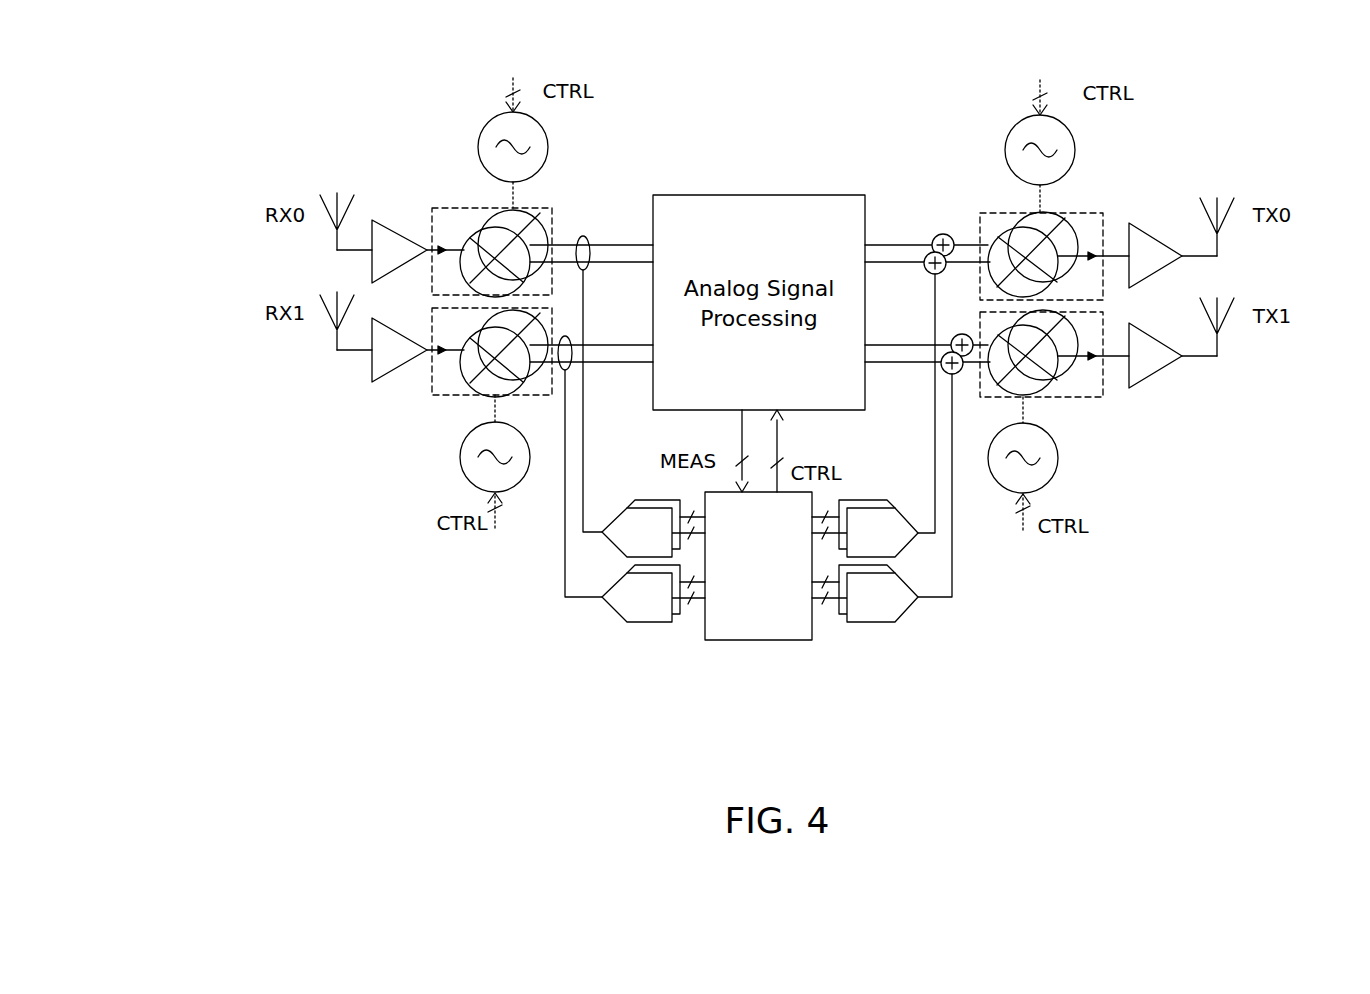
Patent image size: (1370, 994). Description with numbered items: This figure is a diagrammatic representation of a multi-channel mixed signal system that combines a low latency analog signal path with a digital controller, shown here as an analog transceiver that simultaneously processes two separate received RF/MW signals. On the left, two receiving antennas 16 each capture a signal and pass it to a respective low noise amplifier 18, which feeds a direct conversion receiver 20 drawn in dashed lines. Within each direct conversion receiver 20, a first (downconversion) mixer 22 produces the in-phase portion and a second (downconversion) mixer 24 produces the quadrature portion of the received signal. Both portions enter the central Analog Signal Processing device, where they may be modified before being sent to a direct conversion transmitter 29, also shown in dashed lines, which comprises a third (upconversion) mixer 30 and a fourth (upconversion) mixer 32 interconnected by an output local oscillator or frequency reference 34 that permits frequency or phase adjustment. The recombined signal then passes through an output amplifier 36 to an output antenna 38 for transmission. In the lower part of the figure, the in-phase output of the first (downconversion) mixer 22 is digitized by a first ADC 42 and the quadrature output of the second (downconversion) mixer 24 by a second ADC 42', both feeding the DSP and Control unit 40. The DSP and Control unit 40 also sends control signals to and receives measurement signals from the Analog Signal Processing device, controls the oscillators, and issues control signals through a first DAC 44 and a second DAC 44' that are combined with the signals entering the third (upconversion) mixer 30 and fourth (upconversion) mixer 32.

The receiving antenna 16 is at (330, 222).
The low noise amplifier 18 is at (393, 218).
The direct conversion receiver 20 is at (467, 208).
The first (downconversion) mixer 22 is at (530, 215).
The second (downconversion) mixer 24 is at (555, 215).
The direct conversion transmitter 29 is at (1077, 213).
The third (upconversion) mixer 30 is at (1085, 385).
The fourth (upconversion) mixer 32 is at (990, 215).
The output local oscillator or frequency reference 34 is at (1020, 125).
The output amplifier 36 is at (1158, 270).
The output antenna 38 is at (1222, 232).
The DSP and Control unit 40 is at (765, 640).
The I portion first ADC 42 is at (542, 552).
The Q portion second ADC 42' is at (584, 615).
The first DAC 44 is at (878, 492).
The second DAC 44' is at (938, 617).